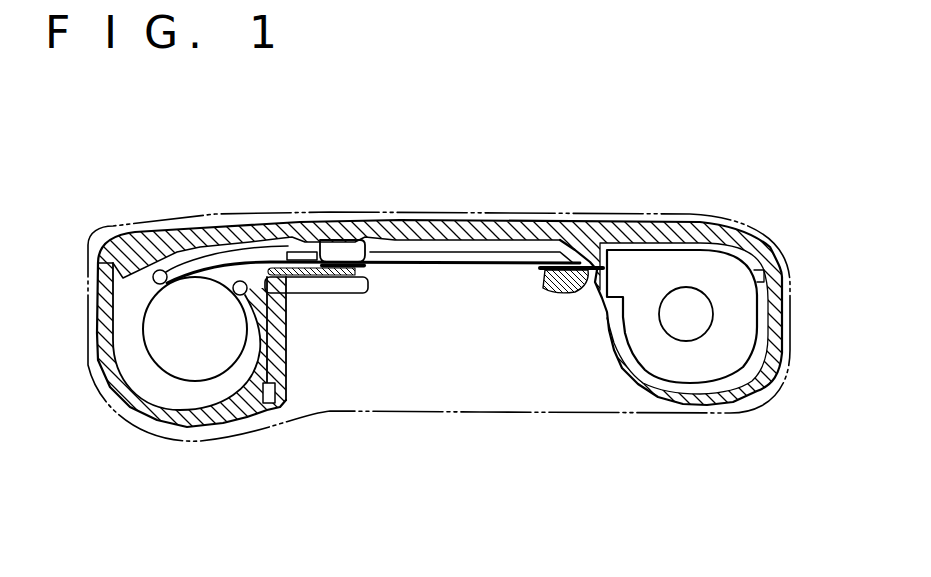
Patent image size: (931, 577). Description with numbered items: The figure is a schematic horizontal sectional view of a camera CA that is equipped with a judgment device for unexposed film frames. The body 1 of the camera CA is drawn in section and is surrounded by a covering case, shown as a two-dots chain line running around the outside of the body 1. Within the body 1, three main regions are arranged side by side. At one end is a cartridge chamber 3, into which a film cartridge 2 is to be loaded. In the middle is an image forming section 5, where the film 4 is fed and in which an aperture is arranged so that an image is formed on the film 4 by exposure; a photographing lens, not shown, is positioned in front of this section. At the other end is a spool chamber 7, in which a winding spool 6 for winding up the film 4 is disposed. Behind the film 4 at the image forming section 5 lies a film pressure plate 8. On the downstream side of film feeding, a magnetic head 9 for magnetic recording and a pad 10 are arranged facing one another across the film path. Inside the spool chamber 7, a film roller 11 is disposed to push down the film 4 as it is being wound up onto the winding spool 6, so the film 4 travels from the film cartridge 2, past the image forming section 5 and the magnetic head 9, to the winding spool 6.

The camera CA is at (523, 213).
The body 1 is at (585, 232).
The film cartridge 2 is at (703, 270).
The cartridge chamber 3 is at (780, 297).
The film 4 is at (647, 233).
The image forming section 5 is at (545, 274).
The winding spool 6 is at (162, 355).
The spool chamber 7 is at (123, 309).
The film pressure plate 8 is at (463, 252).
The magnetic head 9 is at (351, 240).
The pad 10 is at (360, 268).
The film roller 11 is at (162, 270).